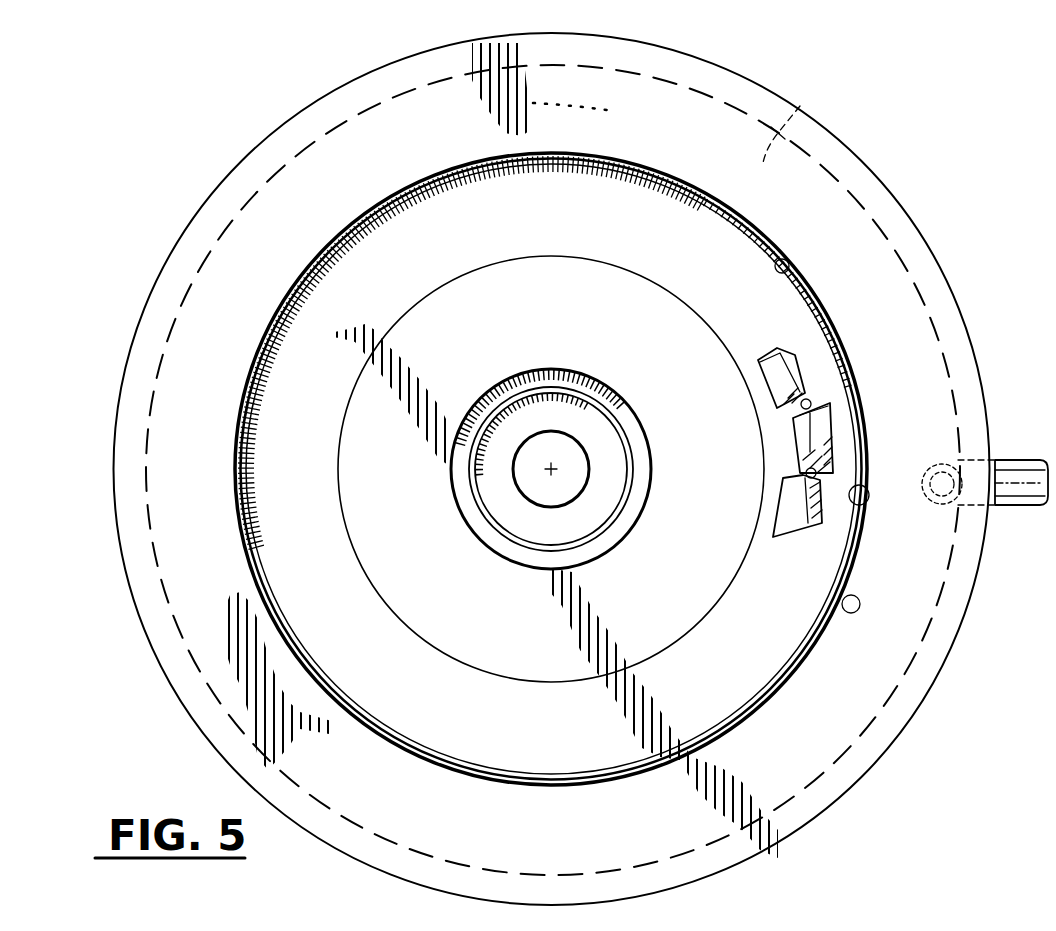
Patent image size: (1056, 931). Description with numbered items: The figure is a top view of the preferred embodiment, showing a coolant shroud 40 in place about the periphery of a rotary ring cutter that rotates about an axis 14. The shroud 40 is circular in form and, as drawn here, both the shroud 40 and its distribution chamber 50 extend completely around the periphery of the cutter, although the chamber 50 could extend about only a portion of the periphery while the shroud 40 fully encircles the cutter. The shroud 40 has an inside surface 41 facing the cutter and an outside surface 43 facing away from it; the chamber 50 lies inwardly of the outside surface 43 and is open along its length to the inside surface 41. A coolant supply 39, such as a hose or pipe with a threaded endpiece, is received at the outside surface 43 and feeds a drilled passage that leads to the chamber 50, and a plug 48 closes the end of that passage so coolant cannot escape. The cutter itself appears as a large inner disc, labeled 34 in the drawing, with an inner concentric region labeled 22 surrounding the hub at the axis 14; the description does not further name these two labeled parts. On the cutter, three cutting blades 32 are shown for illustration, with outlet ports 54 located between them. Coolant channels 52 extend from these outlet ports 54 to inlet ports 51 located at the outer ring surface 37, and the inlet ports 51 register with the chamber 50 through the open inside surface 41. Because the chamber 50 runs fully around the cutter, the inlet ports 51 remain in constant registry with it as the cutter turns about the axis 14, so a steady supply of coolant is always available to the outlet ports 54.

The axis 14 is at (553, 472).
The hub plate 22 is at (716, 525).
The cutting blades 32 is at (826, 444).
The disc 34 is at (554, 216).
The outer ring surface 37 is at (842, 603).
The coolant supply 39 is at (1008, 458).
The coolant shroud 40 is at (840, 146).
The inside surface 41 is at (790, 262).
The outside surface 43 is at (236, 172).
The plug 48 is at (951, 456).
The distribution chamber 50 is at (803, 106).
The inlet ports 51 is at (818, 487).
The coolant channels 52 is at (812, 395).
The outlet ports 54 is at (803, 403).